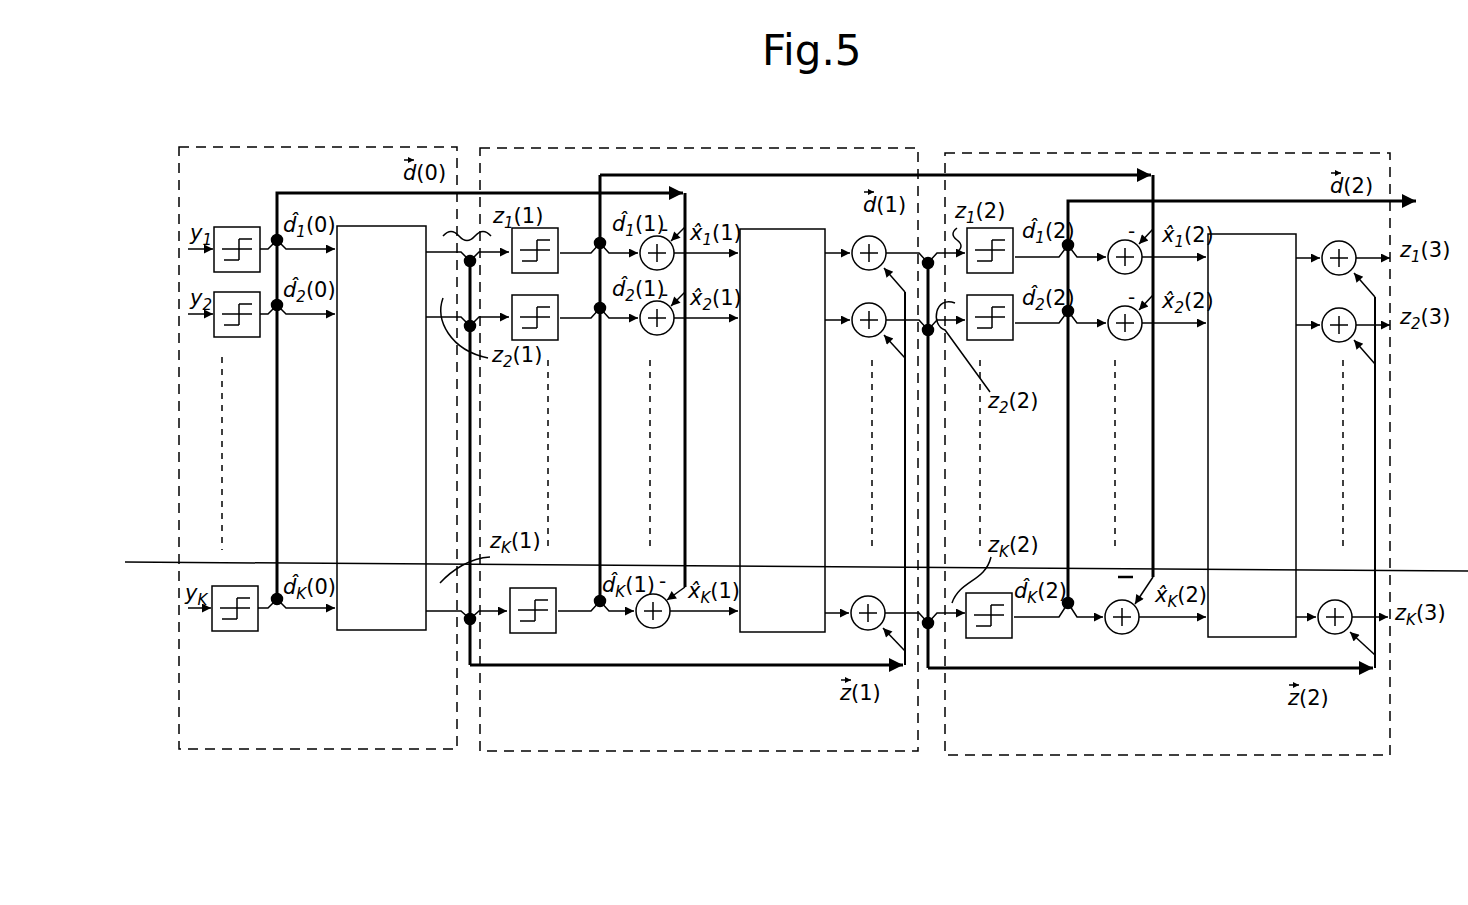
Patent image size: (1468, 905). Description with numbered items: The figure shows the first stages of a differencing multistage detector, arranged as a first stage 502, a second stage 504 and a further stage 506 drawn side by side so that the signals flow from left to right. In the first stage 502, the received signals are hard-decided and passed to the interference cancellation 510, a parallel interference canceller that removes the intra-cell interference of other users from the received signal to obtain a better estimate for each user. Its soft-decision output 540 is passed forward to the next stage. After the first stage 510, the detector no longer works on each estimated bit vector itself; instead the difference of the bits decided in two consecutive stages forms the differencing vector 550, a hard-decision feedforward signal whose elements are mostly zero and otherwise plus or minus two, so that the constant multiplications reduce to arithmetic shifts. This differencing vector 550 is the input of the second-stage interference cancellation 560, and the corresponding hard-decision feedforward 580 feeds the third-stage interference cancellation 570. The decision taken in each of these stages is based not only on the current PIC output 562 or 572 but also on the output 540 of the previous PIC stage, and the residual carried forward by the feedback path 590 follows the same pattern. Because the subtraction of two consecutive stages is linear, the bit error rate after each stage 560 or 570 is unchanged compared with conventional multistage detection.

The first stage 502 is at (326, 758).
The second stage 504 is at (690, 760).
The stage III 506 is at (1105, 762).
The first stage interference cancellation 510 is at (362, 232).
The output of the lth iteration 540 is at (785, 666).
The differencing vector 550 is at (546, 196).
The second stage interference cancellation 560 is at (782, 230).
The current PIC output 562 is at (835, 240).
The third stage interference cancellation 570 is at (1250, 236).
The current PIC output 572 is at (1308, 243).
The differencing vector (hard decision feedforward) 580 is at (1061, 176).
The residual signal vector z(2) feedback path 590 is at (1193, 670).